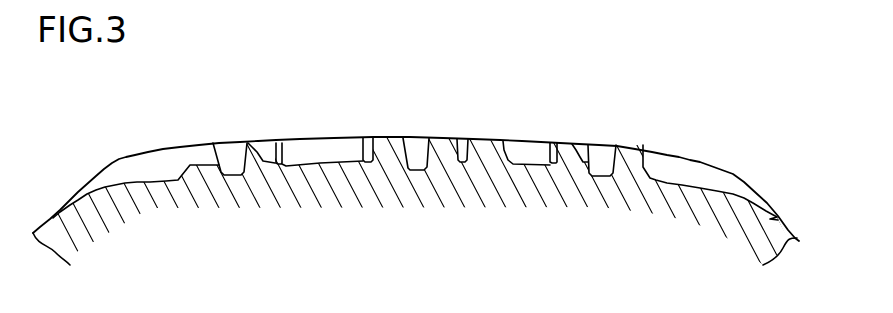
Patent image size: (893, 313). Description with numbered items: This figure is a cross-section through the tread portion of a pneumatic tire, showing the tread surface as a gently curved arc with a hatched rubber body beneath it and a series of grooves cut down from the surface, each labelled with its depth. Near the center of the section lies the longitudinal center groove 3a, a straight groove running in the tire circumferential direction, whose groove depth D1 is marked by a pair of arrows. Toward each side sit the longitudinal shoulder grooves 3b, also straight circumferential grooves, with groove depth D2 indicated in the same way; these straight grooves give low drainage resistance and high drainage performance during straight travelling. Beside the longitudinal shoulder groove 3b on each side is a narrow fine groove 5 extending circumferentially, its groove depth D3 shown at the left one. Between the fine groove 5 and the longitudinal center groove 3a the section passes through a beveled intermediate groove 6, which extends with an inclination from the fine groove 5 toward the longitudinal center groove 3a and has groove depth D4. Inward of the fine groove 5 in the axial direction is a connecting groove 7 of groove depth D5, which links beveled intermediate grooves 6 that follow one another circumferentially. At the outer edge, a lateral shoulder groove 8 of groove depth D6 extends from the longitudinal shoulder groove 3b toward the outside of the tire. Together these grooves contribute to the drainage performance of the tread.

The lateral shoulder groove 8 is at (120, 162).
The longitudinal shoulder groove 3b is at (220, 147).
The longitudinal center groove 3a is at (427, 134).
The fine groove 5 is at (276, 152).
The beveled intermediate groove 6 is at (320, 139).
The connecting groove 7 is at (376, 148).
The groove depth of longitudinal center groove D1 is at (417, 110).
The groove depth of longitudinal shoulder groove D2 is at (233, 120).
The groove depth of fine groove D3 is at (279, 117).
The groove depth of beveled intermediate groove D4 is at (344, 110).
The groove depth of connecting groove D5 is at (369, 110).
The groove depth of lateral shoulder groove D6 is at (146, 125).